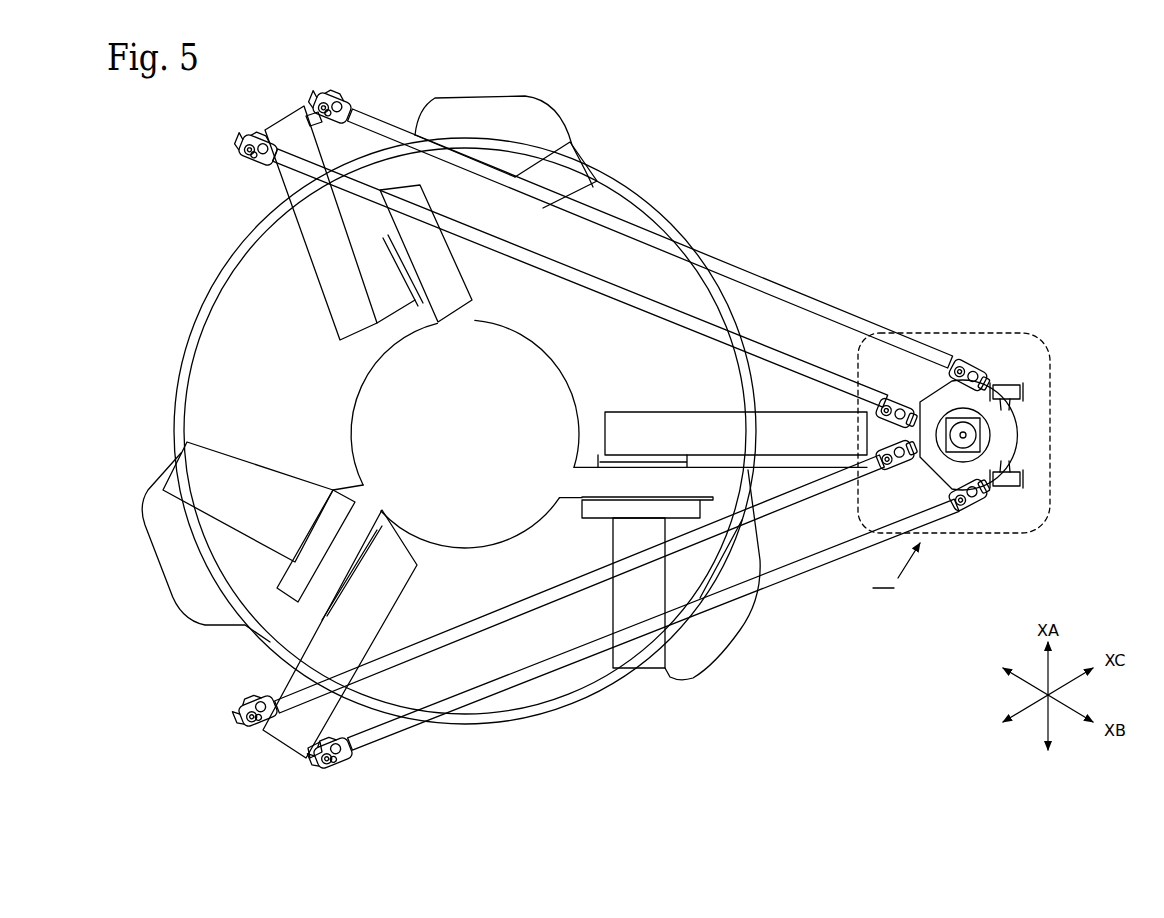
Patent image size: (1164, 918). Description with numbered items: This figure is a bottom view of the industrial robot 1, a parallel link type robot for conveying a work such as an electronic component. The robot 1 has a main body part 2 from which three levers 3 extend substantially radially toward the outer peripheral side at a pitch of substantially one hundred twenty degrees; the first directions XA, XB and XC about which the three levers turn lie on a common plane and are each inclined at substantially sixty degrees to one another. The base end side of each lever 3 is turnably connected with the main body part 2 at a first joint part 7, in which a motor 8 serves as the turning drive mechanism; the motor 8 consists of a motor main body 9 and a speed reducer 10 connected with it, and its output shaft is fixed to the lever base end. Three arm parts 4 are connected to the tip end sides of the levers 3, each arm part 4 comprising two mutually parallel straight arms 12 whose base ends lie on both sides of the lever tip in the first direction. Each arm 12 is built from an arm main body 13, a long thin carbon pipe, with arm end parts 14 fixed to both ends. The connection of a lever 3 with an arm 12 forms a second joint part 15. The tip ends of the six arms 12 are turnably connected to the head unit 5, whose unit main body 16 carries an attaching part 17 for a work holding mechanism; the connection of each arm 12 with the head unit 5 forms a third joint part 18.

The industrial robot 1 is at (930, 176).
The main body part 2 is at (212, 285).
The lever 3 is at (332, 244).
The arm part 4 is at (616, 429).
The head unit 5 is at (987, 433).
The first joint part 7 is at (562, 432).
The motor 8 is at (590, 165).
The motor main body 9 is at (451, 404).
The speed reducer 10 is at (410, 330).
The arm 12 is at (616, 429).
The arm main body 13 is at (590, 272).
The arm end part 14 is at (263, 140).
The second joint part 15 is at (606, 419).
The unit main body 16 is at (987, 433).
The attaching part 17 is at (990, 435).
The third joint part 18 is at (908, 396).